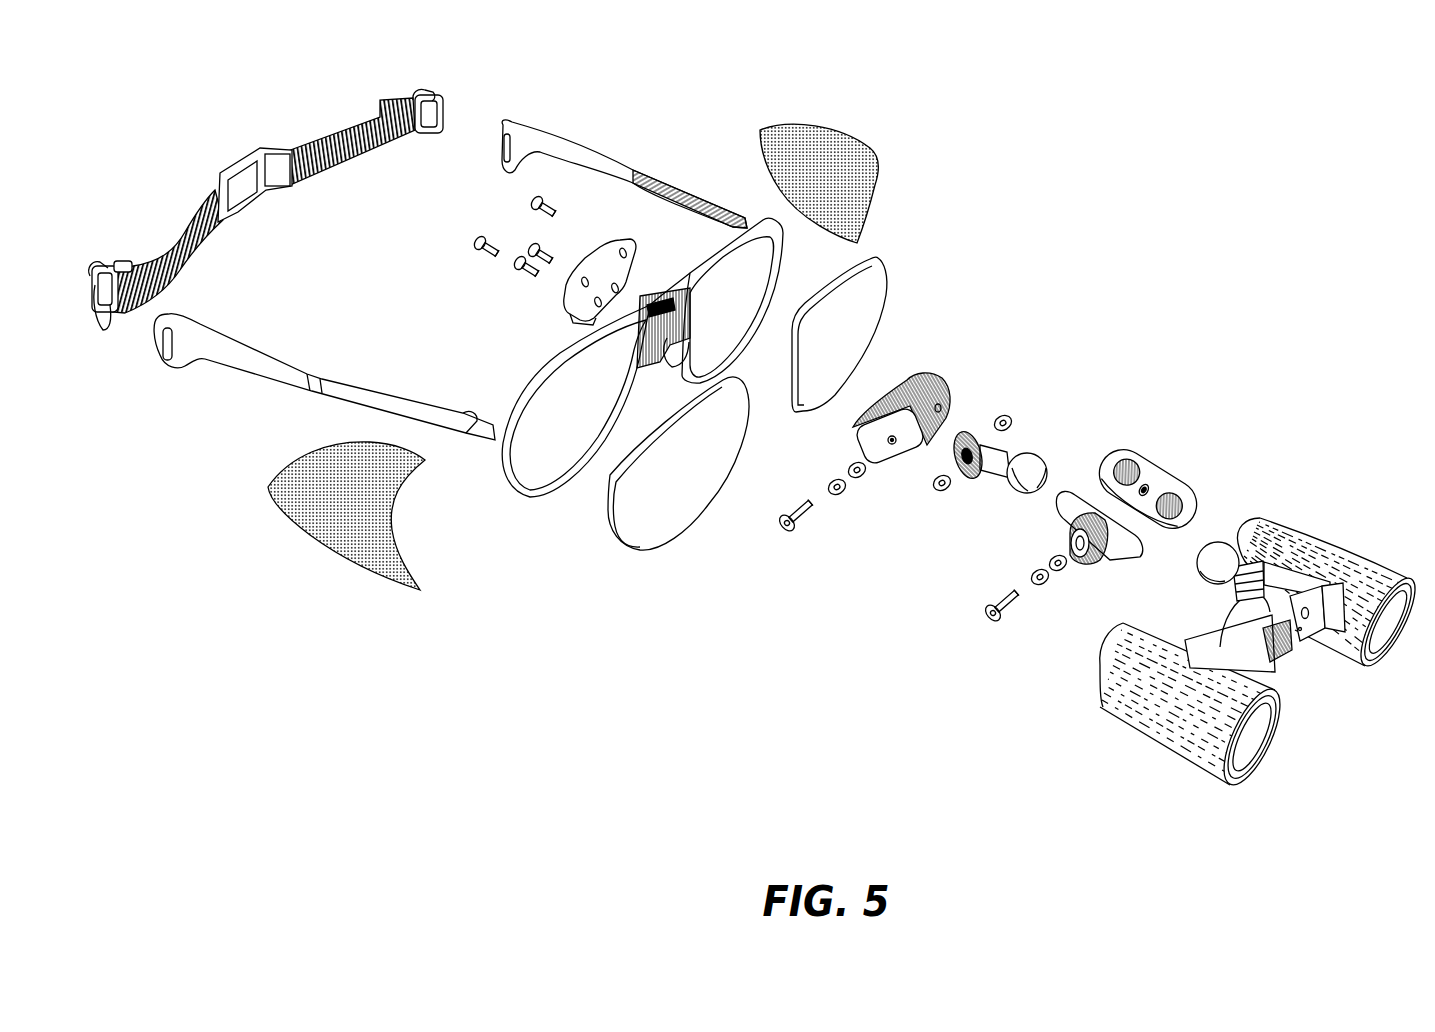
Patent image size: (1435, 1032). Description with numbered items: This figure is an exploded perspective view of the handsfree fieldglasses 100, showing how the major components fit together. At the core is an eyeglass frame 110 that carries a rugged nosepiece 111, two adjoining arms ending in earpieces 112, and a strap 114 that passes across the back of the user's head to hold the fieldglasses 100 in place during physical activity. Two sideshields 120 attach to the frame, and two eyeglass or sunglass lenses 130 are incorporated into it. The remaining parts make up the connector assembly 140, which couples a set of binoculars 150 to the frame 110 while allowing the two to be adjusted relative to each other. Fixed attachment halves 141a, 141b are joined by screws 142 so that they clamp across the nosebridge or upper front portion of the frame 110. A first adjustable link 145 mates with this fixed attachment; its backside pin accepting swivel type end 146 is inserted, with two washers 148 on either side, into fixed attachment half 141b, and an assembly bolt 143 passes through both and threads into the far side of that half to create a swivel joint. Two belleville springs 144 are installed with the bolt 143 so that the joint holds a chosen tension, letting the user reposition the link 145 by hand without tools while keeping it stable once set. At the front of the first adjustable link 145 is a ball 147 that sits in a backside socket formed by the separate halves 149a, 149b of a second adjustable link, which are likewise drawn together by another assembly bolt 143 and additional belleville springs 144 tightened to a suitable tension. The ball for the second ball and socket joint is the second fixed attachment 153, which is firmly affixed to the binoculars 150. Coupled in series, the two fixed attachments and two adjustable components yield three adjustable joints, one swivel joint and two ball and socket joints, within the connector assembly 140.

The handsfree fieldglasses 100 is at (1245, 115).
The eyeglass frame 110 is at (468, 280).
The nosepiece 111 is at (645, 342).
The earpieces 112 is at (230, 358).
The strap 114 is at (121, 312).
The sideshields 120 is at (898, 152).
The eyeglass or sunglass lenses 130 is at (895, 285).
The connector assembly 140 is at (801, 447).
The fixed attachment half 141a is at (560, 298).
The fixed attachment half 141b is at (897, 458).
The screws 142 is at (527, 213).
The assembly bolt 143 is at (790, 530).
The belleville springs 144 is at (815, 463).
The first adjustable link 145 is at (1016, 469).
The backside pin accepting swivel type end 146 is at (970, 428).
The frontside ball 147 is at (1032, 467).
The washers 148 is at (938, 497).
The second adjustable link half 149a is at (1120, 557).
The second adjustable link half 149b is at (1150, 472).
The binoculars 150 is at (1163, 620).
The second fixed attachment 153 is at (1200, 563).